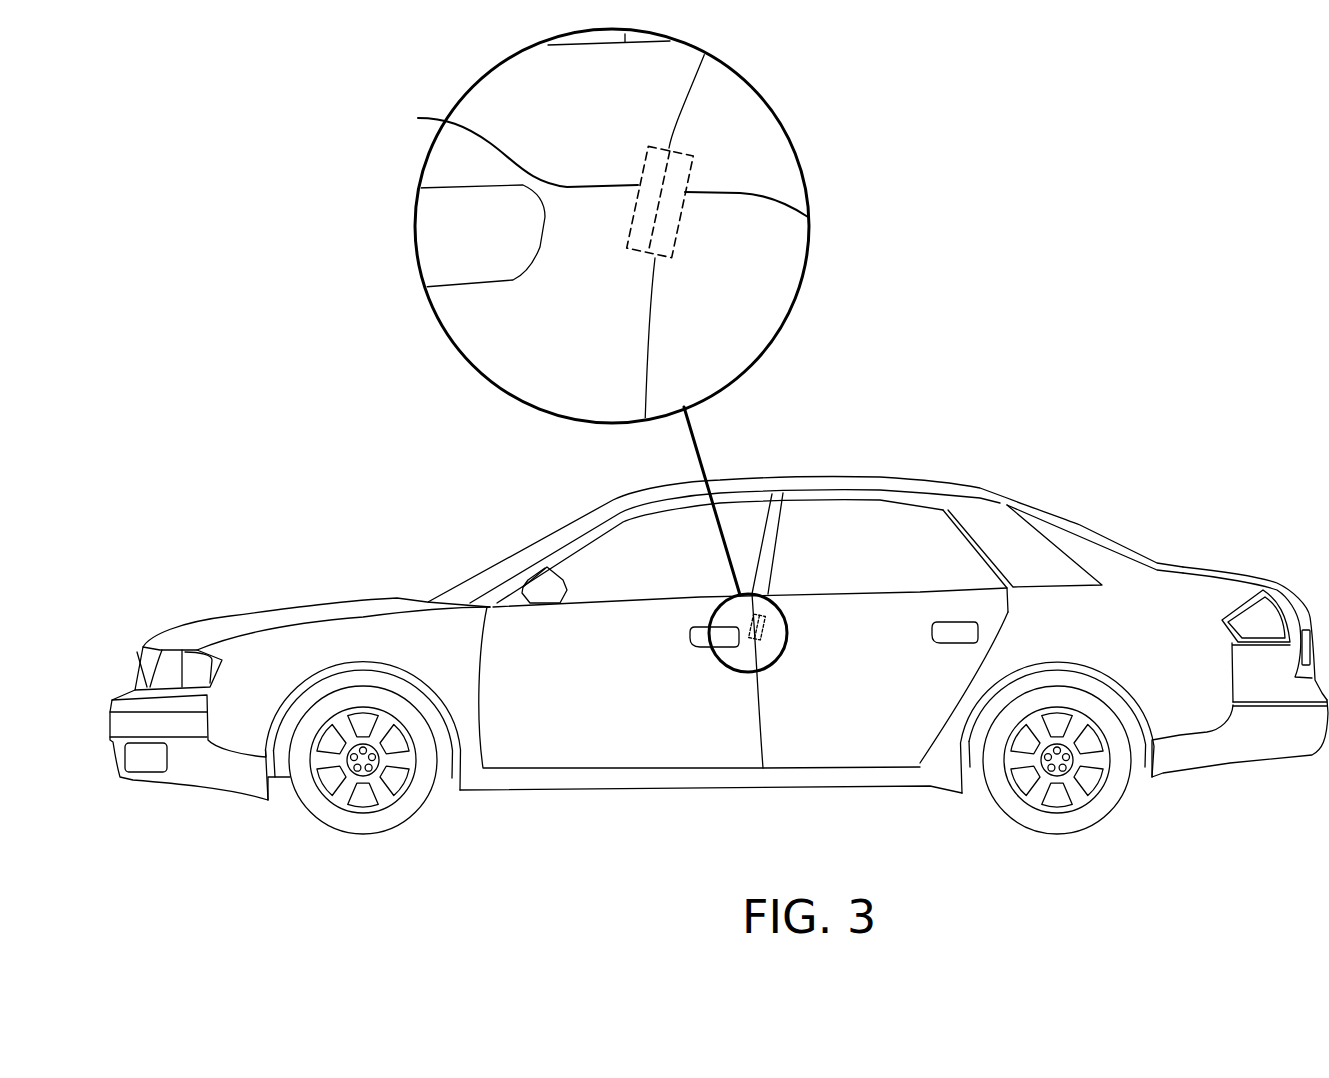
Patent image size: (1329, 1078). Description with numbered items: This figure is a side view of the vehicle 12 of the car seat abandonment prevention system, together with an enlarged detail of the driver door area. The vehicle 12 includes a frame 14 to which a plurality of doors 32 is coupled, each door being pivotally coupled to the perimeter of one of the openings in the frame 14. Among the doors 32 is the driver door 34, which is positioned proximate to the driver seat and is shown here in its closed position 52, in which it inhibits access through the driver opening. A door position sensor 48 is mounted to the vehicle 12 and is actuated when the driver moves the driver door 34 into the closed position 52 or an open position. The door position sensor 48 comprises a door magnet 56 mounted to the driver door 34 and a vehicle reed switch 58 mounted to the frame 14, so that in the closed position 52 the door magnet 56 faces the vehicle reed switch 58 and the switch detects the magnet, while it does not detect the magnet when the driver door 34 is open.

The vehicle 12 is at (997, 362).
The frame 14 is at (772, 277).
The doors 32 is at (563, 760).
The driver door 34 is at (493, 319).
The door position sensor 48 is at (710, 128).
The closed position 52 is at (782, 462).
The door magnet 56 is at (418, 118).
The vehicle reed switch 58 is at (808, 217).